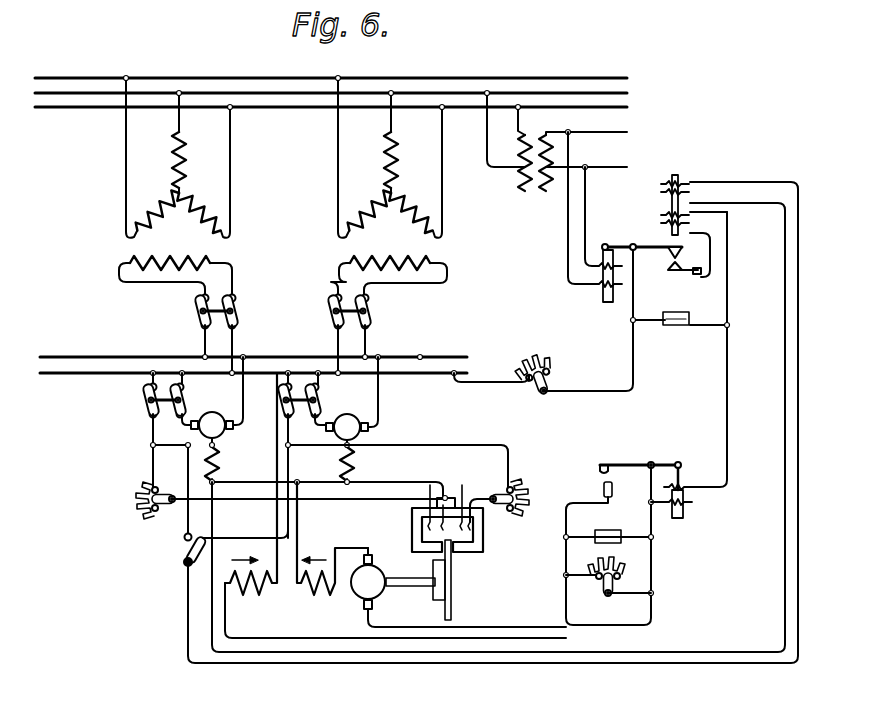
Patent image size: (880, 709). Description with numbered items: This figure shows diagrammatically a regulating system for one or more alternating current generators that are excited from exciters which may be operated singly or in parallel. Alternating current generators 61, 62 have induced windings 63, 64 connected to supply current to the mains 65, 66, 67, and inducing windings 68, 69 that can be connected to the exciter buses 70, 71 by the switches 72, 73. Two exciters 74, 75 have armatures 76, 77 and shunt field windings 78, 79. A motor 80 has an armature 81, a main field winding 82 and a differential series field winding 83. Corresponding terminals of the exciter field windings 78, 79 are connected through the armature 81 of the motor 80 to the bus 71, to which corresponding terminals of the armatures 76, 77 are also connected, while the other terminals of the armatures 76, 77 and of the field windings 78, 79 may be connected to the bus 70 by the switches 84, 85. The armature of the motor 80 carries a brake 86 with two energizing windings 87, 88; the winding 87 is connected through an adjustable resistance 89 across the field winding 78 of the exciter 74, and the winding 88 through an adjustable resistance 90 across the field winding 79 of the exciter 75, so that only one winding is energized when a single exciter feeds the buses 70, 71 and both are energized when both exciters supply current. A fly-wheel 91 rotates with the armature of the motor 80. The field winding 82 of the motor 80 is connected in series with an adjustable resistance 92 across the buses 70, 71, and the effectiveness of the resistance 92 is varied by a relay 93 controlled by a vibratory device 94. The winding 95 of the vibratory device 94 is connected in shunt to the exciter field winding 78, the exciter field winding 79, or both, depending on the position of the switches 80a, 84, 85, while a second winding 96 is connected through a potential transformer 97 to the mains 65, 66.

The alternating current generator 61 is at (189, 157).
The alternating current generator 62 is at (400, 157).
The induced winding 63 is at (200, 195).
The induced winding 64 is at (410, 195).
The main 65 is at (626, 109).
The main 66 is at (626, 94).
The main 67 is at (626, 80).
The inducing winding 68 is at (175, 256).
The inducing winding 69 is at (388, 256).
The exciter bus 70 is at (106, 375).
The exciter bus 71 is at (112, 355).
The switch 72 is at (235, 316).
The switch 73 is at (368, 316).
The exciter 74 is at (214, 408).
The exciter 75 is at (350, 410).
The armature 76 is at (222, 403).
The armature 77 is at (360, 403).
The shunt field winding 78 is at (219, 462).
The shunt field winding 79 is at (362, 462).
The motor 80 is at (411, 563).
The switch 80a is at (185, 563).
The armature 81 is at (377, 581).
The main field winding 82 is at (255, 595).
The differential series field winding 83 is at (315, 595).
The switch 84 is at (150, 402).
The switch 85 is at (300, 412).
The brake 86 is at (449, 539).
The energizing winding 87 is at (430, 485).
The energizing winding 88 is at (462, 485).
The adjustable resistance 89 is at (130, 498).
The adjustable resistance 90 is at (536, 495).
The fly-wheel 91 is at (433, 598).
The adjustable resistance 92 is at (628, 557).
The relay 93 is at (673, 463).
The vibratory device 94 is at (606, 243).
The winding 95 is at (665, 188).
The winding 96 is at (600, 292).
The potential transformer 97 is at (537, 168).